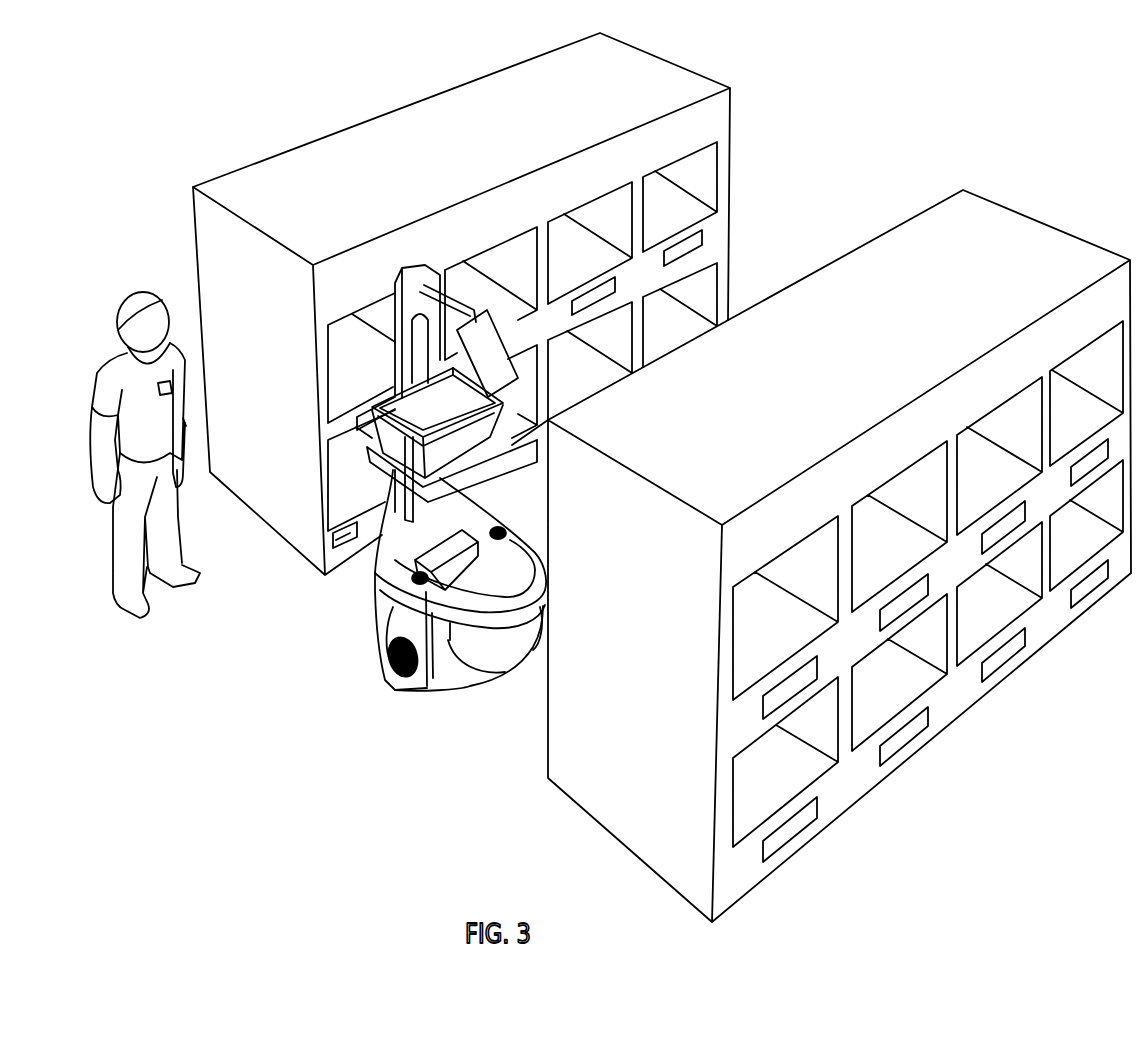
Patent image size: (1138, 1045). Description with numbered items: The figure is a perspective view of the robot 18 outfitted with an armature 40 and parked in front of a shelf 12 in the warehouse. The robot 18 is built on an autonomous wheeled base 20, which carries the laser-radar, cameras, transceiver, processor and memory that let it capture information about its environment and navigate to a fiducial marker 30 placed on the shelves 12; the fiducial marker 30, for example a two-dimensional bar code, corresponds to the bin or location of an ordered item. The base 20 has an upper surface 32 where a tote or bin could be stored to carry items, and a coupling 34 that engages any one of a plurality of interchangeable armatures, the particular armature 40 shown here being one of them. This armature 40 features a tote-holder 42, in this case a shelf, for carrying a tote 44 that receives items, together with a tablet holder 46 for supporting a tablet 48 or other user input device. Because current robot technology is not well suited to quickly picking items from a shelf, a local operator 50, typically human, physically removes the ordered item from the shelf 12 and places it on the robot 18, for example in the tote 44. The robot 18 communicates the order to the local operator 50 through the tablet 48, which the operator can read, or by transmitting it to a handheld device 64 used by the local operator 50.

The shelf 12 is at (280, 150).
The robot 18 is at (432, 504).
The autonomous wheeled base 20 is at (430, 690).
The fiducial marker 30 is at (345, 578).
The upper surface 32 is at (488, 593).
The coupling 34 is at (415, 498).
The armature 40 is at (430, 275).
The tote-holder 42 is at (375, 433).
The tote 44 is at (432, 418).
The tablet holder 46 is at (522, 394).
The tablet 48 is at (483, 337).
The local operator 50 is at (112, 357).
The handheld device 64 is at (185, 422).